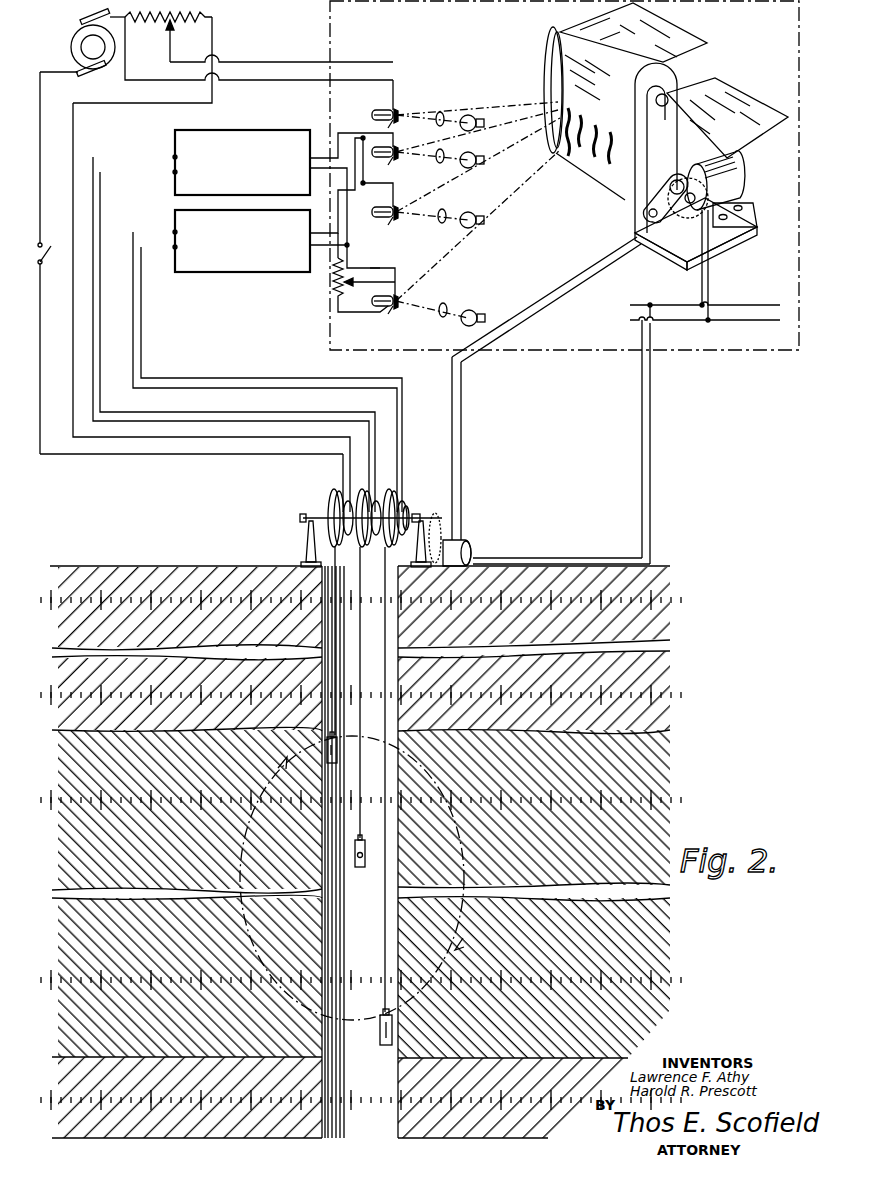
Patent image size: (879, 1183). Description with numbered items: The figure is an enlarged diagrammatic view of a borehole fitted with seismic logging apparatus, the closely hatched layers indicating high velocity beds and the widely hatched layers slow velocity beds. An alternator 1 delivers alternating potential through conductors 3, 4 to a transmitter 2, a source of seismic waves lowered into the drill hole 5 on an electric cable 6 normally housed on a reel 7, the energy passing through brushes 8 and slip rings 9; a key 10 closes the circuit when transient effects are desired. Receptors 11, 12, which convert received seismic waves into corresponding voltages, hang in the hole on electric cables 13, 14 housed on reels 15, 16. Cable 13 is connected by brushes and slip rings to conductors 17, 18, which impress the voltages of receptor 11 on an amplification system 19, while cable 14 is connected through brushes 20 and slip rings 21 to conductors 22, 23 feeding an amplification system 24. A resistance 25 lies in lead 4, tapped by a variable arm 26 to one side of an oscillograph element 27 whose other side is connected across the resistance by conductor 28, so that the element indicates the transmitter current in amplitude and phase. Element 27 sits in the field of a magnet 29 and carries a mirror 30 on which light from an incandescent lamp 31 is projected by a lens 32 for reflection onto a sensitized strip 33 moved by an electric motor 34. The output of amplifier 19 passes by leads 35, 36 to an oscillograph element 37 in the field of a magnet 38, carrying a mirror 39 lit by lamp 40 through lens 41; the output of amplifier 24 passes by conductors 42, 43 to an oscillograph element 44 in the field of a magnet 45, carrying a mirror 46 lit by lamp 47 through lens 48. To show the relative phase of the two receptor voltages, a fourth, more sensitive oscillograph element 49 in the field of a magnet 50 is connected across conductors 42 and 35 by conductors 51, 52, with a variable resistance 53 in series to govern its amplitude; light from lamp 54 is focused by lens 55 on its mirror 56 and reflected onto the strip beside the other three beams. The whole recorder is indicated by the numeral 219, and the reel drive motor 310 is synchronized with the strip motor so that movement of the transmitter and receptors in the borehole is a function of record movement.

The alternator 1 is at (70, 46).
The transmitter 2 is at (339, 740).
The conductor 3 is at (41, 383).
The conductor 4 is at (211, 307).
The drill hole 5 is at (386, 1138).
The electric cable 6 is at (335, 624).
The reel 7 is at (325, 510).
The brushes 8 is at (350, 496).
The slip rings 9 is at (342, 640).
The key 10 is at (57, 263).
The receptor 11 is at (363, 839).
The receptor 12 is at (380, 1034).
The electric cable 13 is at (362, 808).
The electric cable 14 is at (384, 981).
The reel 15 is at (369, 691).
The reel 16 is at (397, 572).
The conductor 17 is at (296, 422).
The conductor 18 is at (327, 390).
The amplification system 19 is at (177, 188).
The brushes 20 is at (405, 508).
The slip rings 21 is at (437, 520).
The conductor 22 is at (142, 360).
The conductor 23 is at (185, 389).
The amplification system 24 is at (193, 275).
The resistance 25 is at (207, 17).
The variable arm 26 is at (172, 48).
The oscillograph element 27 is at (397, 122).
The conductor 28 is at (238, 82).
The magnet 29 is at (372, 113).
The mirror 30 is at (398, 113).
The incandescent lamp 31 is at (475, 117).
The lens 32 is at (443, 114).
The sensitized strip 33 is at (684, 49).
The electric motor 34 is at (732, 180).
The lead 35 is at (321, 155).
The lead 36 is at (314, 172).
The oscillograph element 37 is at (399, 158).
The magnet 38 is at (382, 158).
The mirror 39 is at (399, 152).
The incandescent lamp 40 is at (474, 158).
The lens 41 is at (441, 166).
The conductor 42 is at (314, 249).
The conductor 43 is at (314, 232).
The oscillograph element 44 is at (398, 219).
The magnet 45 is at (380, 218).
The mirror 46 is at (410, 206).
The incandescent lamp 47 is at (487, 214).
The lens 48 is at (445, 219).
The oscillograph element 49 is at (399, 308).
The magnet 50 is at (378, 307).
The conductor 51 is at (383, 264).
The conductor 52 is at (350, 286).
The variable resistance 53 is at (332, 290).
The incandescent lamp 54 is at (478, 318).
The lens 55 is at (461, 301).
The mirror 56 is at (399, 297).
The recorder 219 is at (592, 351).
The motor 310 is at (474, 553).